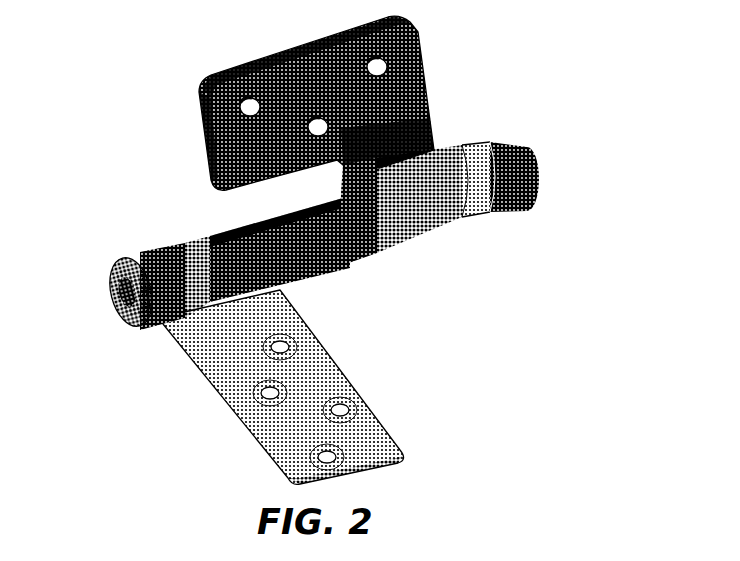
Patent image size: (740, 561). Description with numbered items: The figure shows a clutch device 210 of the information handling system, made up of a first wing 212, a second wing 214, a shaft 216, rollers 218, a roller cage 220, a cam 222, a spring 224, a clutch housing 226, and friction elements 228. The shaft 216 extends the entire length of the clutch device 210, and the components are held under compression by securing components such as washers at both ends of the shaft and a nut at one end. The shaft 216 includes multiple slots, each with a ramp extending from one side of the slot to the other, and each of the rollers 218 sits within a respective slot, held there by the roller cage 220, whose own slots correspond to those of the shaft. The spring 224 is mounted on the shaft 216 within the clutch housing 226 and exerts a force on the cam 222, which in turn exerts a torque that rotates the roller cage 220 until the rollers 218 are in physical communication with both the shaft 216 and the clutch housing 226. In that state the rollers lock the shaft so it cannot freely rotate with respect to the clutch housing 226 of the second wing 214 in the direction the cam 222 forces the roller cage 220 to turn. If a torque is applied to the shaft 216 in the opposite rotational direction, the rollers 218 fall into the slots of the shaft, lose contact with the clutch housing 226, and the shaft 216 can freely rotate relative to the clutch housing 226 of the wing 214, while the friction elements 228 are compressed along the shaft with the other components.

The clutch device 210 is at (340, 250).
The first wing 212 is at (397, 50).
The second wing 214 is at (370, 437).
The shaft 216 is at (110, 302).
The rollers 218 is at (257, 236).
The roller cage 220 is at (225, 267).
The cam 222 is at (192, 249).
The spring 224 is at (153, 262).
The clutch housing 226 is at (347, 232).
The friction elements 228 is at (473, 217).